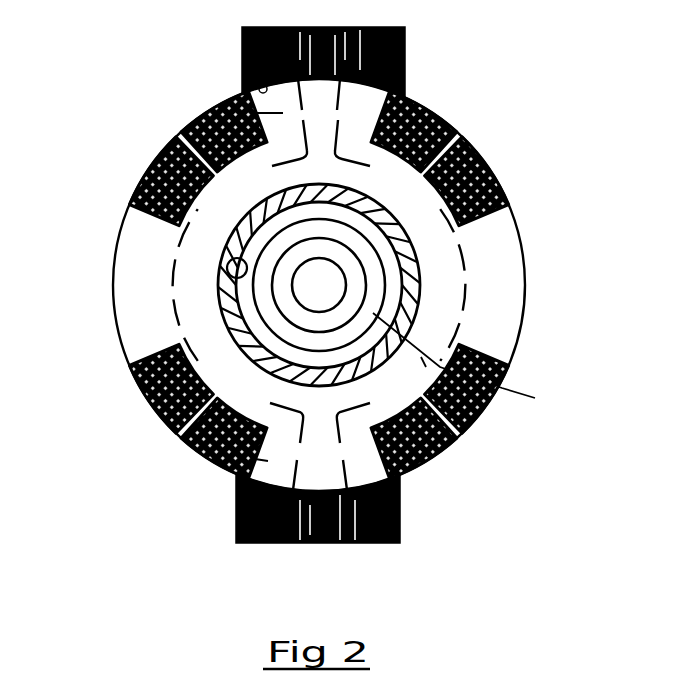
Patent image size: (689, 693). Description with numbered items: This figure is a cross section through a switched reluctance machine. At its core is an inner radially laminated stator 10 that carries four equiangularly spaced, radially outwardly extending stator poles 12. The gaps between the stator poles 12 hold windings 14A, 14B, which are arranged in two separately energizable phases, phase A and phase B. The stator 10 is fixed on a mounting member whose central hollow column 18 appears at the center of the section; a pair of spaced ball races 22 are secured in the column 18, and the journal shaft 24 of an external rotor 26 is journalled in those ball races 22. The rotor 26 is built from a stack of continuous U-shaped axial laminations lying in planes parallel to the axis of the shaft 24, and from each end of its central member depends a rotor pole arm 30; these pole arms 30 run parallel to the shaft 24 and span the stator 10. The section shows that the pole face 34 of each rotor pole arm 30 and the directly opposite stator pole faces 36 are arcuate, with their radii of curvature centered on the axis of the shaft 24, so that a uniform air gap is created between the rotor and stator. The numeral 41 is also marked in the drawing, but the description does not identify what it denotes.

The stator 10 is at (534, 263).
The stator pole 12 is at (247, 100).
The winding 14A is at (153, 167).
The winding 14B is at (198, 122).
The central hollow column 18 is at (228, 280).
The ball race 22 is at (394, 299).
The journal shaft 24 is at (337, 299).
The external rotor 26 is at (410, 541).
The rotor pole arm 30 is at (404, 33).
The pole face 34 is at (245, 86).
The stator pole face 36 is at (113, 257).
The flux path 41 is at (192, 298).